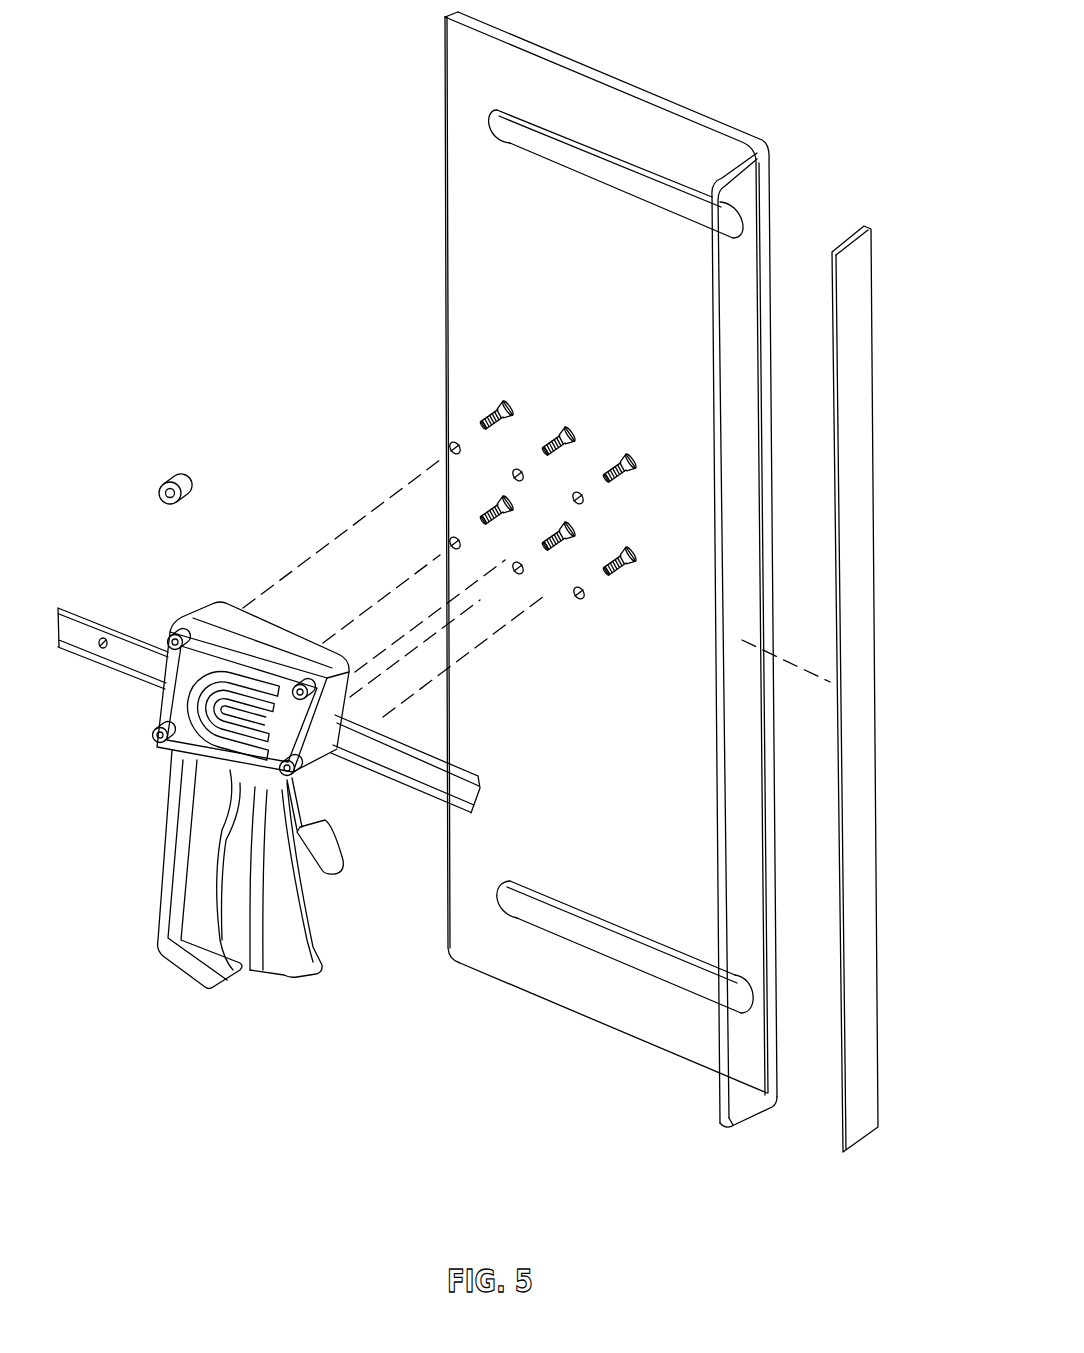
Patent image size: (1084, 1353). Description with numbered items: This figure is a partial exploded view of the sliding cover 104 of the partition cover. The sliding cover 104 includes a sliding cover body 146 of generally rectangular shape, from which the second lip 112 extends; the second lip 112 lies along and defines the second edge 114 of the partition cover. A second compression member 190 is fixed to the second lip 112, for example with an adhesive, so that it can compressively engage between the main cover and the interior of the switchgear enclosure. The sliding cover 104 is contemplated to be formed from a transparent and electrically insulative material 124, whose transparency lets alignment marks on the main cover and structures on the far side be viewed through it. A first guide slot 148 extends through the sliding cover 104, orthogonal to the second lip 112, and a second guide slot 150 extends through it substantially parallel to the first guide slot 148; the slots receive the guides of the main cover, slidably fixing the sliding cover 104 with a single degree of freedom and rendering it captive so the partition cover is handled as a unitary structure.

The sliding cover 104 is at (573, 1072).
The second lip 112 is at (768, 184).
The second edge 114 is at (773, 1125).
The transparent and electrically insulative material 124 is at (550, 813).
The sliding cover body 146 is at (480, 208).
The first guide slot 148 is at (552, 138).
The second guide slot 150 is at (697, 980).
The second compression member 190 is at (860, 278).